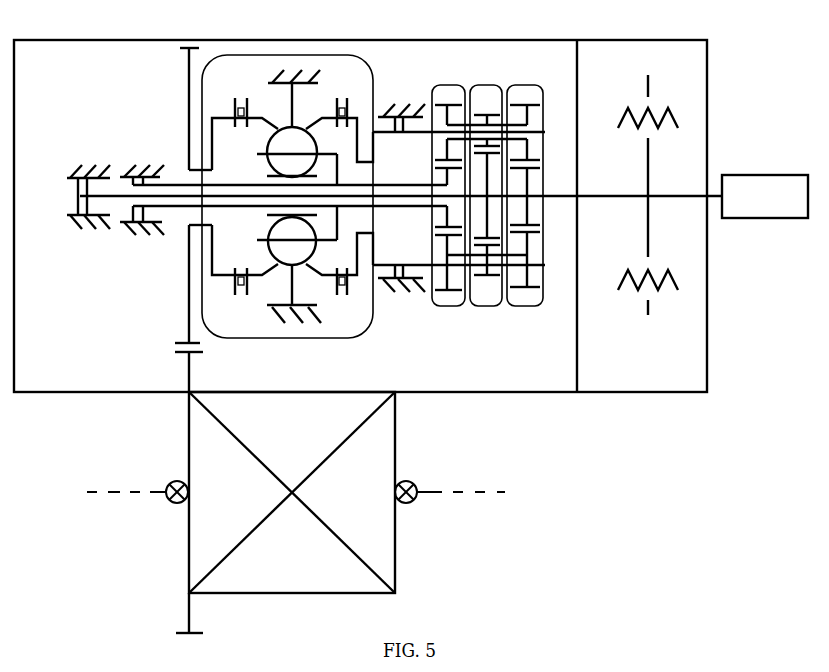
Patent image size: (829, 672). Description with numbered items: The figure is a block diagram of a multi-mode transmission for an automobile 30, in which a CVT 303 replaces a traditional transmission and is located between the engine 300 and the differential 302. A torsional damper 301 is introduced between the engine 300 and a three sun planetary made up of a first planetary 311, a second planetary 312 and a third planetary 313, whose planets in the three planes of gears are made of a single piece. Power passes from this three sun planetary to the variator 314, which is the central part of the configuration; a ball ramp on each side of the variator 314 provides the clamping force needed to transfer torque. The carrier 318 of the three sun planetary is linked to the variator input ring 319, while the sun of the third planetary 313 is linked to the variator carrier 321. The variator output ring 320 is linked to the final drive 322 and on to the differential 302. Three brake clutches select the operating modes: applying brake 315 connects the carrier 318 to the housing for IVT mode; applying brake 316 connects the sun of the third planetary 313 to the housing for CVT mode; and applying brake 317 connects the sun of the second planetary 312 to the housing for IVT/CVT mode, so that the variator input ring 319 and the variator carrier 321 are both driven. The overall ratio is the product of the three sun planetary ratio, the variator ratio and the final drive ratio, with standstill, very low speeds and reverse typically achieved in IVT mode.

The automobile 30 is at (568, 524).
The engine 300 is at (796, 174).
The torsional damper 301 is at (680, 37).
The differential 302 is at (233, 600).
The CVT 303 is at (311, 36).
The first planetary 311 is at (534, 86).
The second planetary 312 is at (481, 86).
The third planetary 313 is at (438, 86).
The variator 314 is at (247, 54).
The brake for IVT mode 315 is at (403, 135).
The brake for CVT mode 316 is at (137, 147).
The brake for IVT/CVT mode 317 is at (86, 233).
The carrier of the three sun planetary 318 is at (558, 244).
The variator input ring 319 is at (325, 112).
The variator output ring 320 is at (264, 116).
The variator carrier 321 is at (340, 209).
The final drive 322 is at (187, 377).